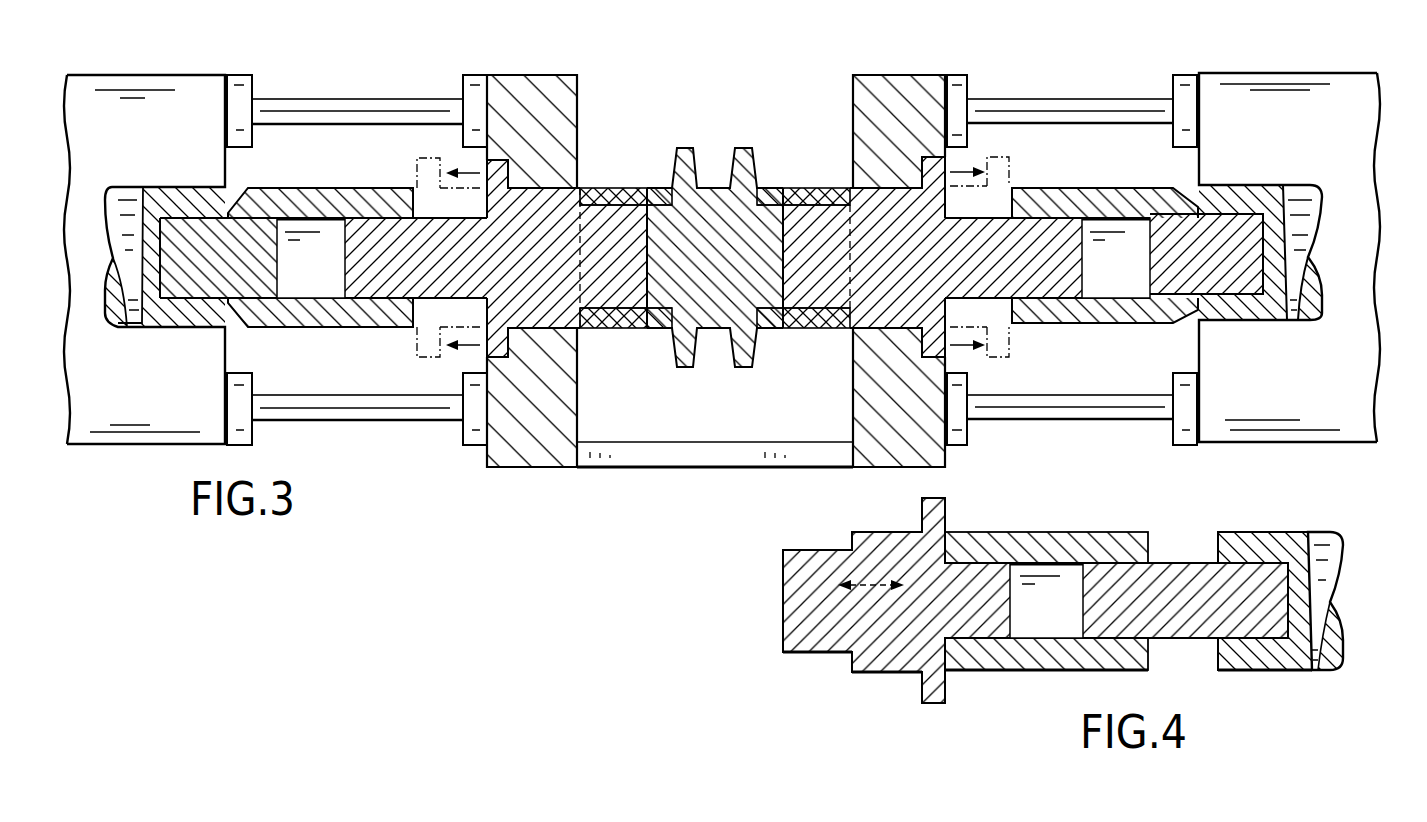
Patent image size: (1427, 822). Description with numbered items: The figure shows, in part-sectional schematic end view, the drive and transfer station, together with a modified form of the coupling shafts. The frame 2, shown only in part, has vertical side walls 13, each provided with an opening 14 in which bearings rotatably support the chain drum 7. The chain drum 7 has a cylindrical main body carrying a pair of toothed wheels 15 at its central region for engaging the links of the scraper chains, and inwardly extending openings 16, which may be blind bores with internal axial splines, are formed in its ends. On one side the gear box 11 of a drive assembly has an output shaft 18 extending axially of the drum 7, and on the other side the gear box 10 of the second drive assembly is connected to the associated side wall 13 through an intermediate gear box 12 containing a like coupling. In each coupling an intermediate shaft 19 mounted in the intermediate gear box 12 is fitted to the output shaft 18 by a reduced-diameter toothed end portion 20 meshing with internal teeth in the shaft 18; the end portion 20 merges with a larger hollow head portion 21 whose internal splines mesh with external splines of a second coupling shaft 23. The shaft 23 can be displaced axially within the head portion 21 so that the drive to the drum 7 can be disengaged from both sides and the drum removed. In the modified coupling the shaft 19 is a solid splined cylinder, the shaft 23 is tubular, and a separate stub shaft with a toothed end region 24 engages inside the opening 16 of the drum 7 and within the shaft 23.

In FIG. 3, the frame 2 is at (722, 450).
In FIG. 3, the chain drum 7 is at (668, 318).
In FIG. 3, the gear box 10 is at (147, 93).
In FIG. 3, the gear box 11 is at (1360, 132).
In FIG. 3, the intermediate gear box 12 is at (407, 107).
In FIG. 3, the side wall 13 is at (563, 411).
In FIG. 3, the opening 14 is at (553, 185).
In FIG. 3, the toothed wheel 15 is at (747, 150).
In FIG. 3, the opening 16 is at (622, 200).
In FIG. 3, the output shaft 18 is at (1305, 223).
In FIG. 4, the output shaft 18 is at (1333, 553).
In FIG. 3, the intermediate shaft 19 is at (1121, 190).
In FIG. 4, the intermediate shaft 19 is at (1200, 570).
In FIG. 3, the toothed end portion 20 is at (1250, 268).
In FIG. 3, the hollow head portion 21 is at (1112, 310).
In FIG. 3, the shaft 23 is at (545, 302).
In FIG. 4, the shaft 23 is at (1072, 536).
In FIG. 3, the toothed end region 24 is at (625, 290).
In FIG. 4, the toothed end region 24 is at (832, 640).